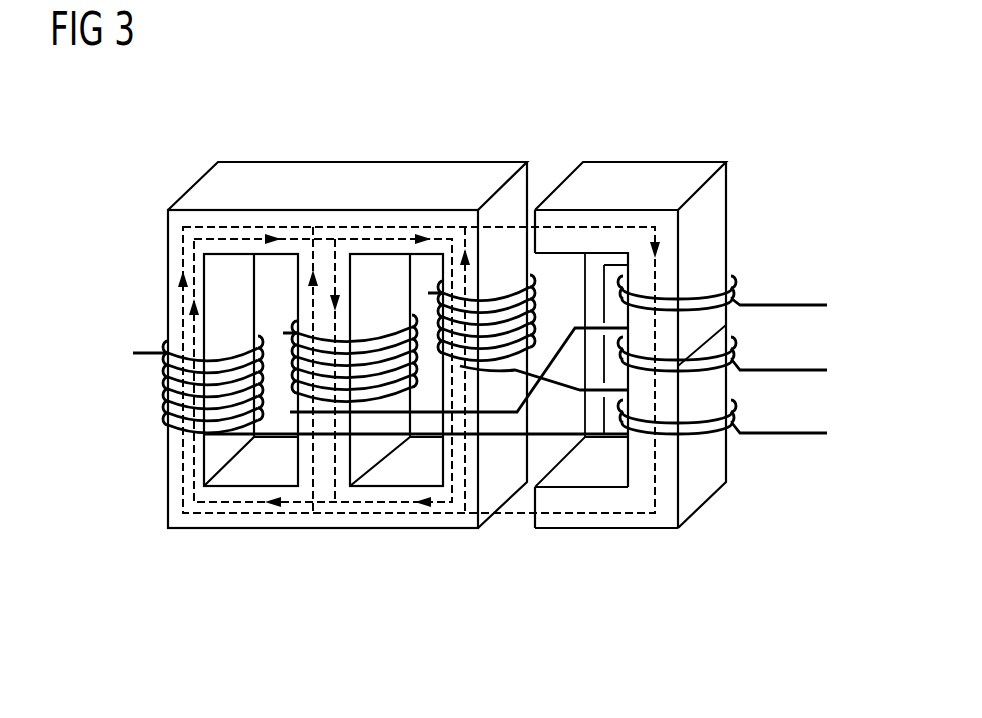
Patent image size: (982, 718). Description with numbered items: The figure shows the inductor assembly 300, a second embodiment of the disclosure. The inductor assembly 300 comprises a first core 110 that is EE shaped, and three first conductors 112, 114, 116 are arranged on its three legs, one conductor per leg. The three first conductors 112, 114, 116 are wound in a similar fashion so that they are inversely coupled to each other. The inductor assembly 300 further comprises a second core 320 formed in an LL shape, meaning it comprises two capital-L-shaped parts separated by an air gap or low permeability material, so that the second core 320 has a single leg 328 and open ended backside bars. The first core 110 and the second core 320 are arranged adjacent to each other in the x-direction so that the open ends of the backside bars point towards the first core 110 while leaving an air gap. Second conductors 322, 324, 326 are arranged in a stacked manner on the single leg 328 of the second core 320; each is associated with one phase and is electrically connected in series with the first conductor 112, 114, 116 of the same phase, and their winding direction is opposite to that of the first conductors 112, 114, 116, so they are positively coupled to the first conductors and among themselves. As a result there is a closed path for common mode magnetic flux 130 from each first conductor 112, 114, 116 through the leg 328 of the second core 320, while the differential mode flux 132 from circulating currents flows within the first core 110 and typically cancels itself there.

The inductor assembly 300 is at (704, 118).
The first core 110 is at (337, 173).
The first conductor 112 is at (165, 395).
The first conductor 114 is at (375, 328).
The first conductor 116 is at (497, 287).
The common mode magnetic flux 130 is at (657, 480).
The differential mode flux 132 is at (235, 501).
The second core 320 is at (671, 384).
The fourth winding 322 is at (736, 276).
The fifth winding 324 is at (736, 338).
The sixth winding 326 is at (736, 401).
The single leg 328 is at (667, 515).